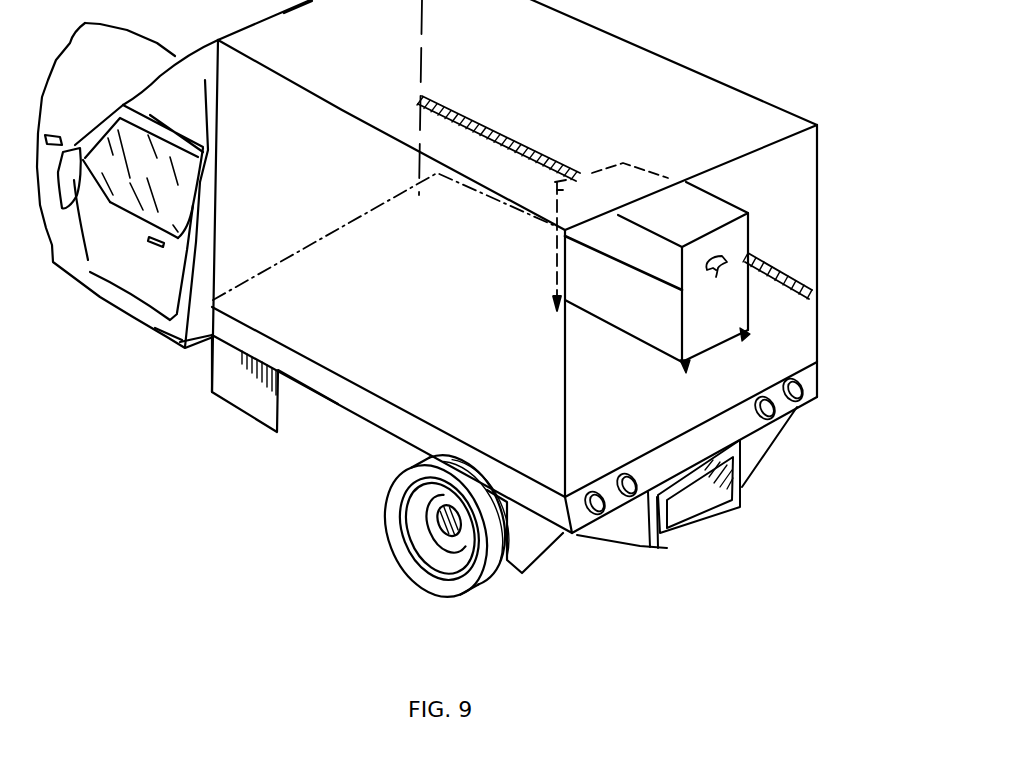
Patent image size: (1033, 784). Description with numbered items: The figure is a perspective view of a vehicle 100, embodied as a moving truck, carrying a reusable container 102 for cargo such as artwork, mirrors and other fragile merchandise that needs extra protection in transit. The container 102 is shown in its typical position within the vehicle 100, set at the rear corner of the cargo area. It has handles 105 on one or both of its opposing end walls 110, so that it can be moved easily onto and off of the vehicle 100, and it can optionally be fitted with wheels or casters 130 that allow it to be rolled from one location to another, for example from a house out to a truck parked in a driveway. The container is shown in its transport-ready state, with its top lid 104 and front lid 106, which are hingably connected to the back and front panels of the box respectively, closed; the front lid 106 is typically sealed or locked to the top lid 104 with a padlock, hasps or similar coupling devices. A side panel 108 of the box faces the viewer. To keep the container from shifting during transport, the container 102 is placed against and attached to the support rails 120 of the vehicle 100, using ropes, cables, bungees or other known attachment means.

The vehicle 100 is at (817, 376).
The reusable container 102 is at (735, 241).
The top lid 104 is at (705, 208).
The handles 105 is at (721, 278).
The front lid 106 is at (617, 232).
The side panel 108 is at (632, 315).
The end walls 110 is at (703, 339).
The support rails 120 is at (812, 285).
The wheels or casters 130 is at (685, 372).